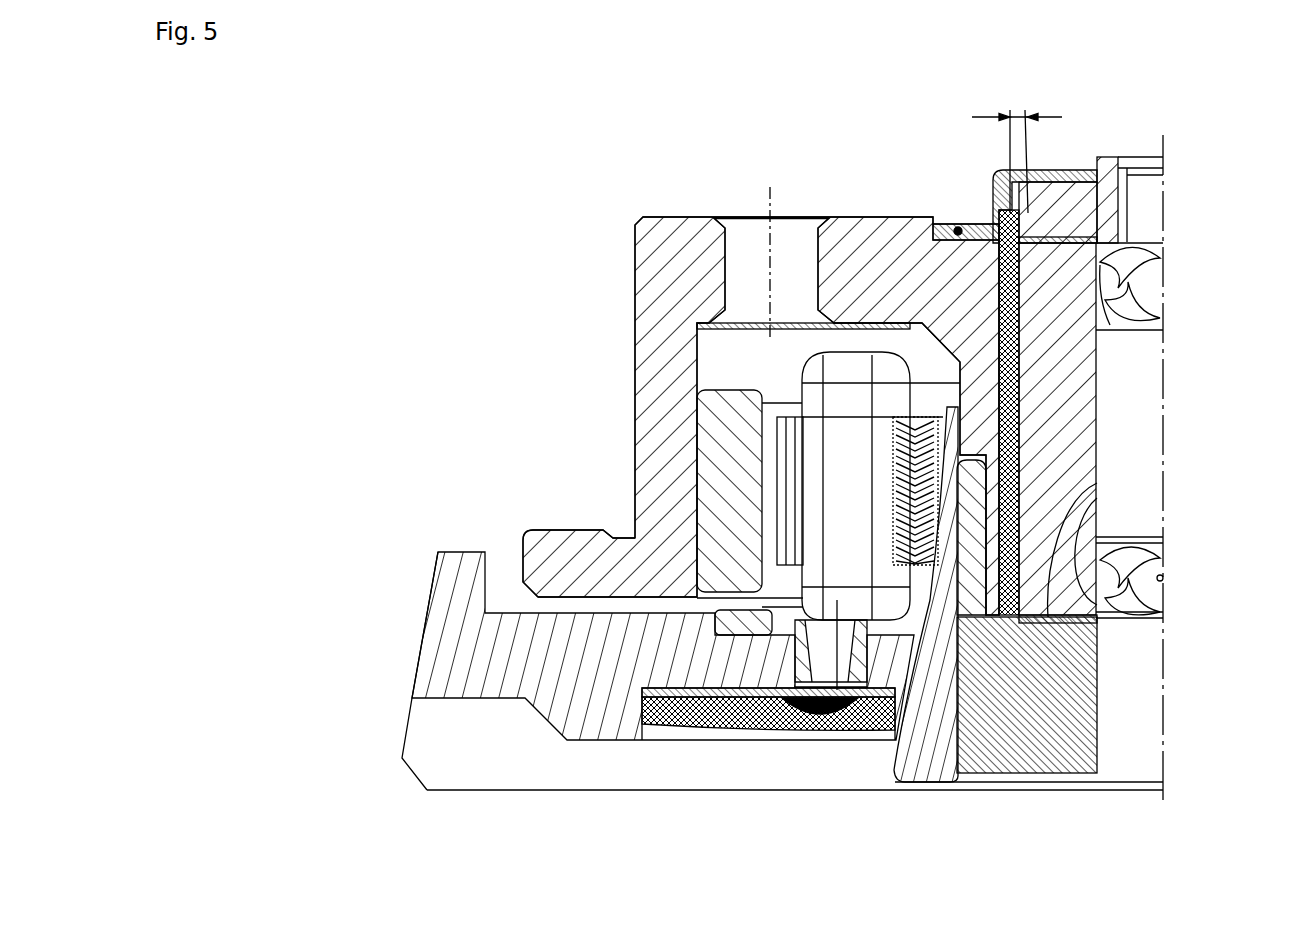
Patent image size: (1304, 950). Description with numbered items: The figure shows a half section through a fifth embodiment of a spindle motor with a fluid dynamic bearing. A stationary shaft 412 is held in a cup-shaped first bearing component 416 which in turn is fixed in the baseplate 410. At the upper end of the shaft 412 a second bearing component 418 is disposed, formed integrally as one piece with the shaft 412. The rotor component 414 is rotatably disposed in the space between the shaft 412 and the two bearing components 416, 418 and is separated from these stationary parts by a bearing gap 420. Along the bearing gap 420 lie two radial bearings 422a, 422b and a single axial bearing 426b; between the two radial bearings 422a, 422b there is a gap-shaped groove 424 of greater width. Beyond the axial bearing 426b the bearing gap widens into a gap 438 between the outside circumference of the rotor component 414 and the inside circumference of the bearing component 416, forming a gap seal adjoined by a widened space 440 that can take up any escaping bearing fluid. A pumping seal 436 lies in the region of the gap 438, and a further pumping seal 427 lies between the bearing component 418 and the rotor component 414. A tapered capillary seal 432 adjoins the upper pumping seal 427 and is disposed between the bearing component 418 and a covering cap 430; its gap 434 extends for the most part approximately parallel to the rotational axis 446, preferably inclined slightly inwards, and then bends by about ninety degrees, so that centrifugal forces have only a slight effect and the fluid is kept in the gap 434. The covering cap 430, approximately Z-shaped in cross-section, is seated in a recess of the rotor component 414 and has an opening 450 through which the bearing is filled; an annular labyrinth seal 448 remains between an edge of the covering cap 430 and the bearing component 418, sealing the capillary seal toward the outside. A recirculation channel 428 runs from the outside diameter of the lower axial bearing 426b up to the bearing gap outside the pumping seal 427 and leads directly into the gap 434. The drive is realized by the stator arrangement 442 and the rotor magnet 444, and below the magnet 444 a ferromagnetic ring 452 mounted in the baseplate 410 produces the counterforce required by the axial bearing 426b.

The baseplate 410 is at (528, 665).
The shaft 412 is at (1130, 712).
The rotor component 414 is at (698, 278).
The bearing component 416 is at (1067, 730).
The bearing component 418 is at (1063, 215).
The bearing gap 420 is at (1097, 483).
The radial bearing 422a is at (1135, 280).
The radial bearing 422b is at (1163, 577).
The groove 424 is at (1096, 391).
The axial bearing 426b is at (1097, 645).
The pumping seal 427 is at (1040, 238).
The recirculation channel 428 is at (995, 347).
The covering cap 430 is at (1037, 290).
The capillary seal 432 is at (1063, 205).
The gap 434 is at (1009, 208).
The pumping seal 436 is at (950, 640).
The gap 438 is at (957, 600).
The space 440 is at (910, 367).
The stator arrangement 442 is at (820, 367).
The magnet 444 is at (733, 480).
The rotational axis 446 is at (1140, 162).
The labyrinth seal 448 is at (1105, 170).
The opening 450 is at (1037, 187).
The ferromagnetic ring 452 is at (750, 630).